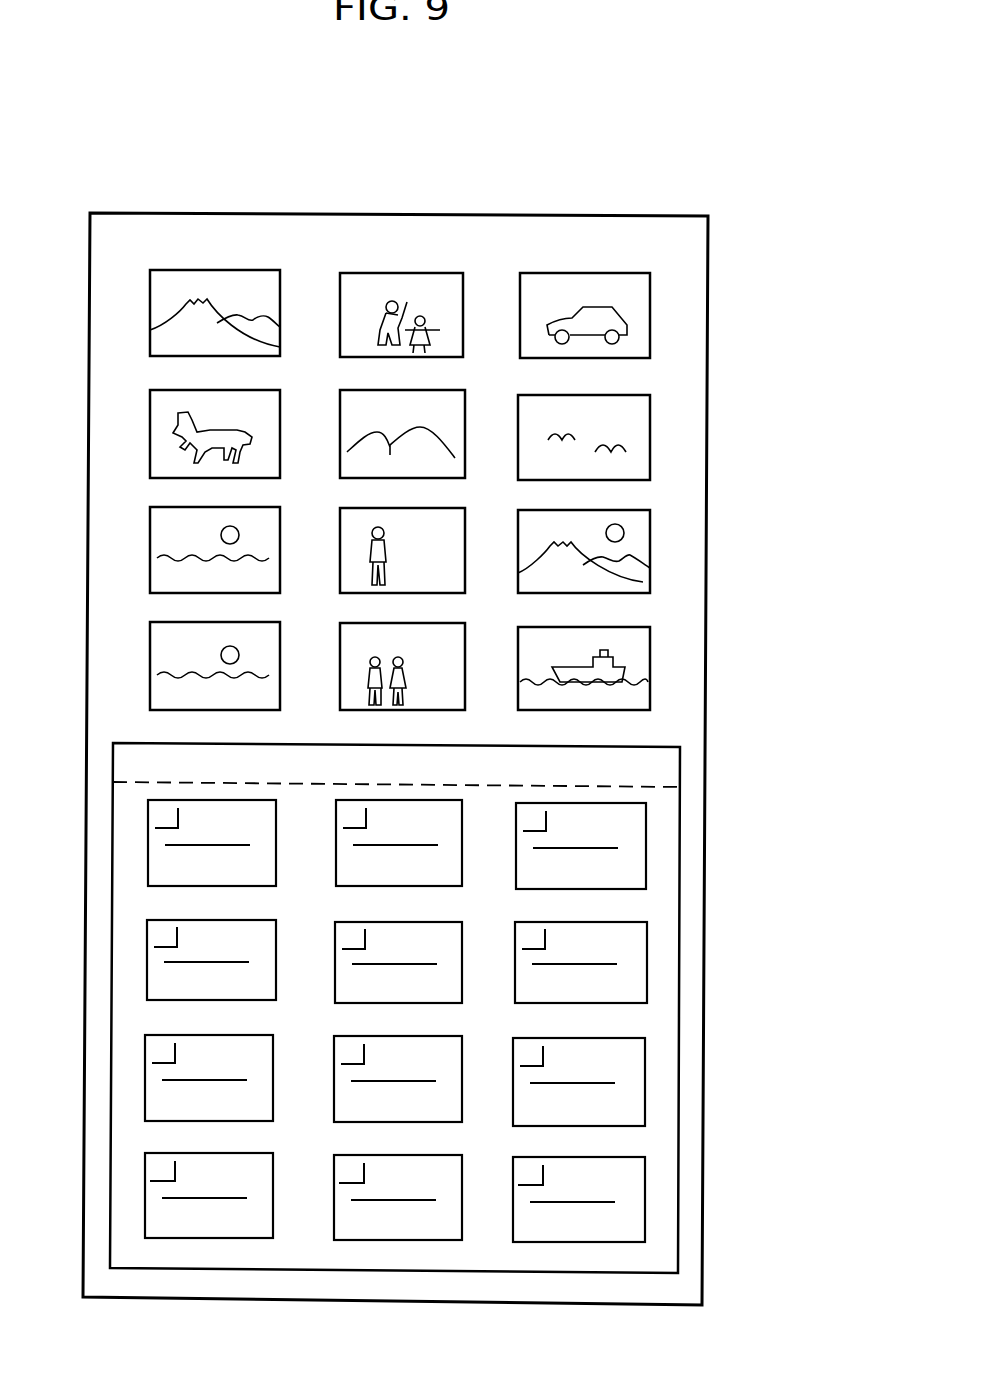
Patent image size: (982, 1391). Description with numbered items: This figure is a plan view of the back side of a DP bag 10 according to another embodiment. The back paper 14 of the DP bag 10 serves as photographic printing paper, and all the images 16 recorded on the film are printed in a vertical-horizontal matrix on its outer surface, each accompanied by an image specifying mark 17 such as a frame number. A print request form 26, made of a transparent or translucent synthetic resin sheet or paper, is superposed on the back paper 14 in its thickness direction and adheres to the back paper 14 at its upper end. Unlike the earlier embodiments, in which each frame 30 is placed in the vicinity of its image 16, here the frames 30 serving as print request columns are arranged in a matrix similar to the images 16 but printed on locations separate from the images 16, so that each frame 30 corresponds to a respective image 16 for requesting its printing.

The DP bag 10 is at (516, 214).
The back paper 14 is at (678, 692).
The images 16 is at (220, 270).
The image specifying marks 17 is at (172, 283).
The print request form 26 is at (678, 853).
The frame 30 is at (148, 805).